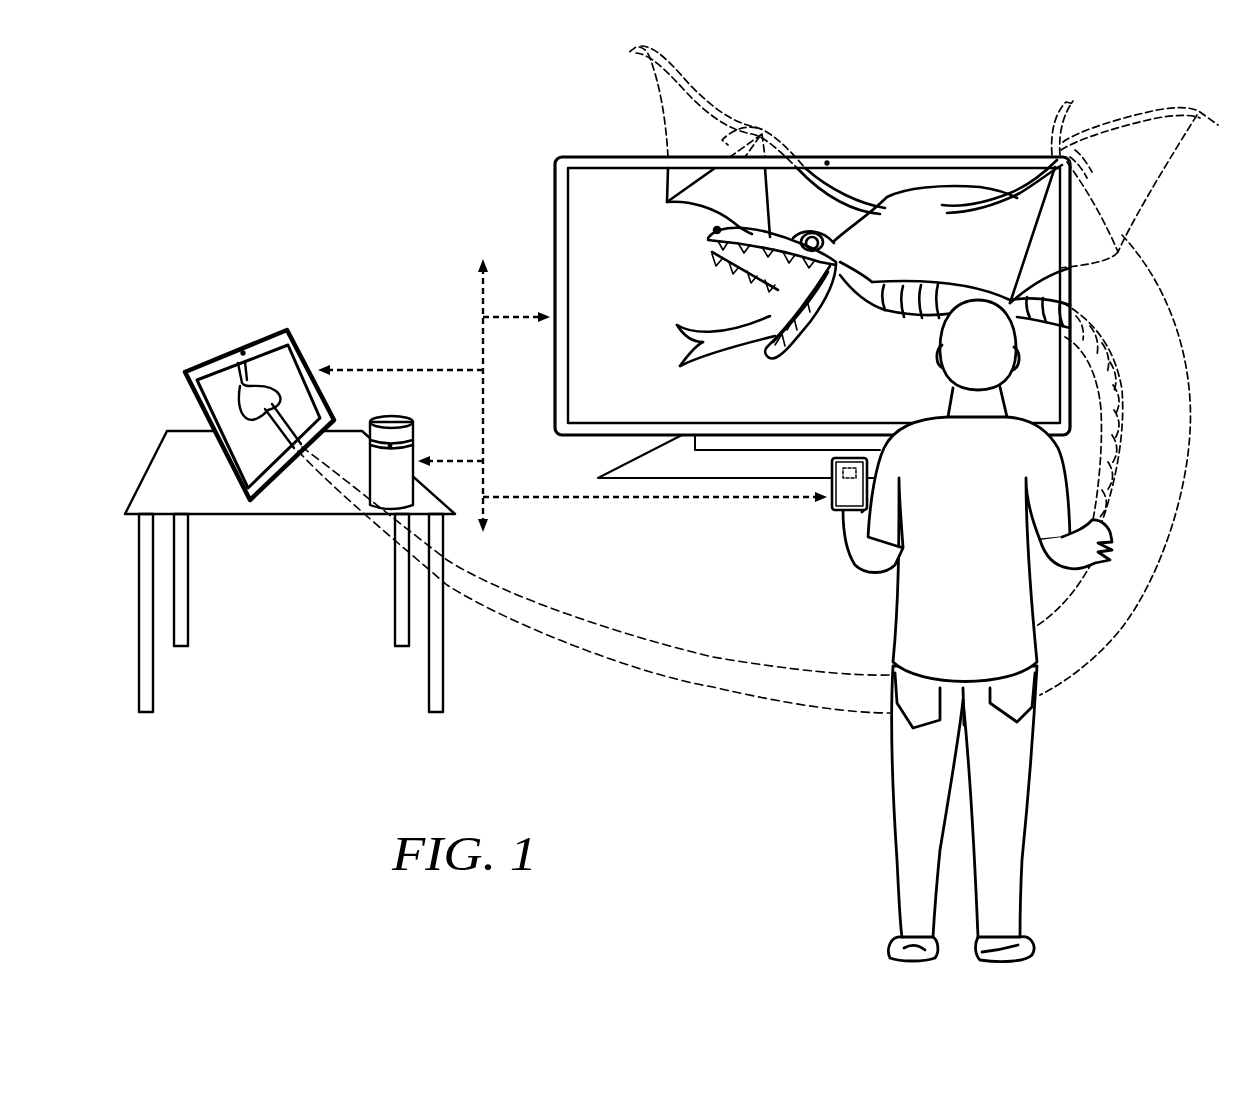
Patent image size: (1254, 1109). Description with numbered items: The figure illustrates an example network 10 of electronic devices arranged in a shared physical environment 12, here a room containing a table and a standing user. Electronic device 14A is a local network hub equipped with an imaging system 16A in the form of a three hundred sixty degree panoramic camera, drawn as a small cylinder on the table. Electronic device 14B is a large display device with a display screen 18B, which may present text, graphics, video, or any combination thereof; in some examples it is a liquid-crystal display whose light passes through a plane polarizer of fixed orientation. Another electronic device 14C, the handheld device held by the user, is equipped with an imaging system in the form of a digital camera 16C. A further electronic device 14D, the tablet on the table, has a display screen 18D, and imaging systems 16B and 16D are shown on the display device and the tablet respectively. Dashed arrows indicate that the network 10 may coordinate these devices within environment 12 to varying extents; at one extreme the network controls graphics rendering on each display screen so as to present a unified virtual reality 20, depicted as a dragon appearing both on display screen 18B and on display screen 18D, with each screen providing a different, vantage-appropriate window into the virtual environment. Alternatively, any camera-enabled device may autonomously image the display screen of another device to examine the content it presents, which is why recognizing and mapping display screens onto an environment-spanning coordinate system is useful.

The network 10 is at (572, 384).
The shared physical environment 12 is at (266, 165).
The electronic device 14A is at (408, 492).
The electronic device 14B is at (692, 476).
The electronic device 14C is at (843, 518).
The tablet device 14D is at (186, 389).
The imaging system 16A is at (390, 448).
The sensor of television 16B is at (834, 104).
The digital camera 16C is at (840, 472).
The sensor of tablet 16D is at (242, 351).
The display screen 18B is at (609, 209).
The display screen 18D is at (275, 455).
The unified virtual reality 20 is at (929, 248).